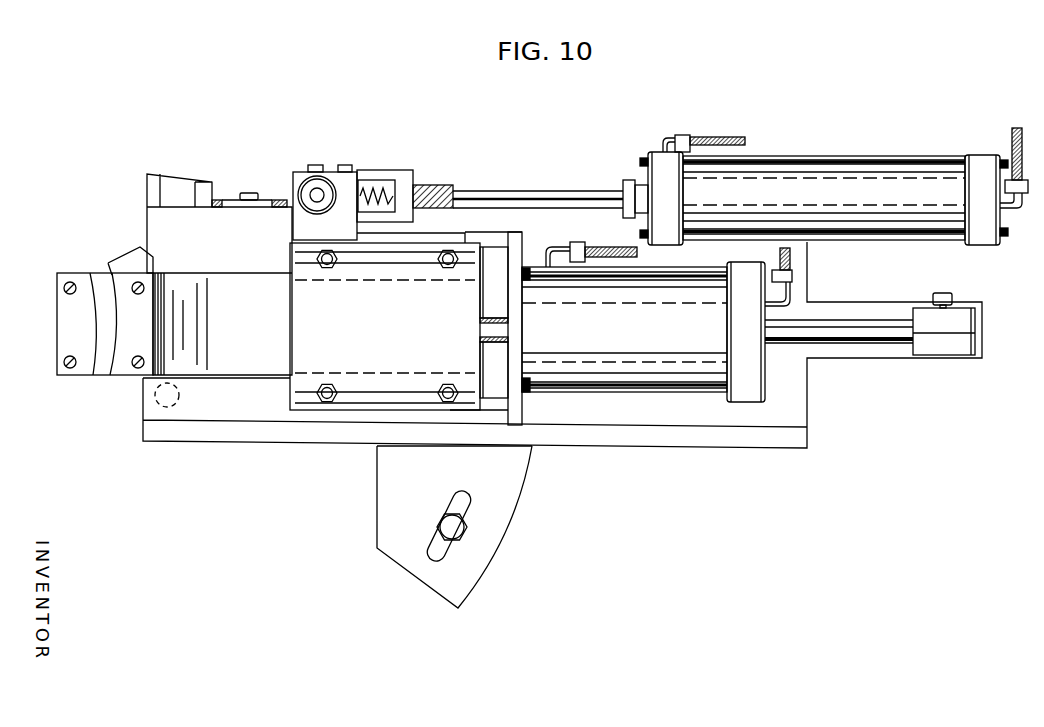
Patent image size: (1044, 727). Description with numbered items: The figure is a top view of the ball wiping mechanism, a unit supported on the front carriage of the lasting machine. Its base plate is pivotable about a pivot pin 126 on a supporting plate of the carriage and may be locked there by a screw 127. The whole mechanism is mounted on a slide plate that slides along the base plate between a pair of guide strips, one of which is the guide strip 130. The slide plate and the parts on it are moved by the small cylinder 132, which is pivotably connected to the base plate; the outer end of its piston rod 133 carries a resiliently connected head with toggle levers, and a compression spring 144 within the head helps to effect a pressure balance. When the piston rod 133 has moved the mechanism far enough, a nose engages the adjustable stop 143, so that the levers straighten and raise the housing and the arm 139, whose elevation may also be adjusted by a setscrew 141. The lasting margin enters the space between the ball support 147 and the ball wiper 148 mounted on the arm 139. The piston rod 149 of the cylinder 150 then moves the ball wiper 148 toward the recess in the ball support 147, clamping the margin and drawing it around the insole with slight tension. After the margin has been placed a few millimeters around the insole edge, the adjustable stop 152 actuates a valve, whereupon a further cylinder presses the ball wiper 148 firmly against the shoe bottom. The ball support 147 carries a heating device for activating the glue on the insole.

The pivot pin 126 is at (155, 400).
The screw 127 is at (458, 525).
The guide strip 130 is at (718, 438).
The small cylinder 132 is at (864, 182).
The piston rod 133 is at (525, 193).
The arm 139 is at (263, 338).
The setscrew 141 is at (310, 190).
The adjustable stop 143 is at (175, 185).
The compression spring 144 is at (380, 180).
The ball support 147 is at (63, 330).
The ball wiper 148 is at (120, 265).
The piston rod 149 is at (490, 327).
The cylinder 150 is at (640, 335).
The adjustable stop 152 is at (938, 347).